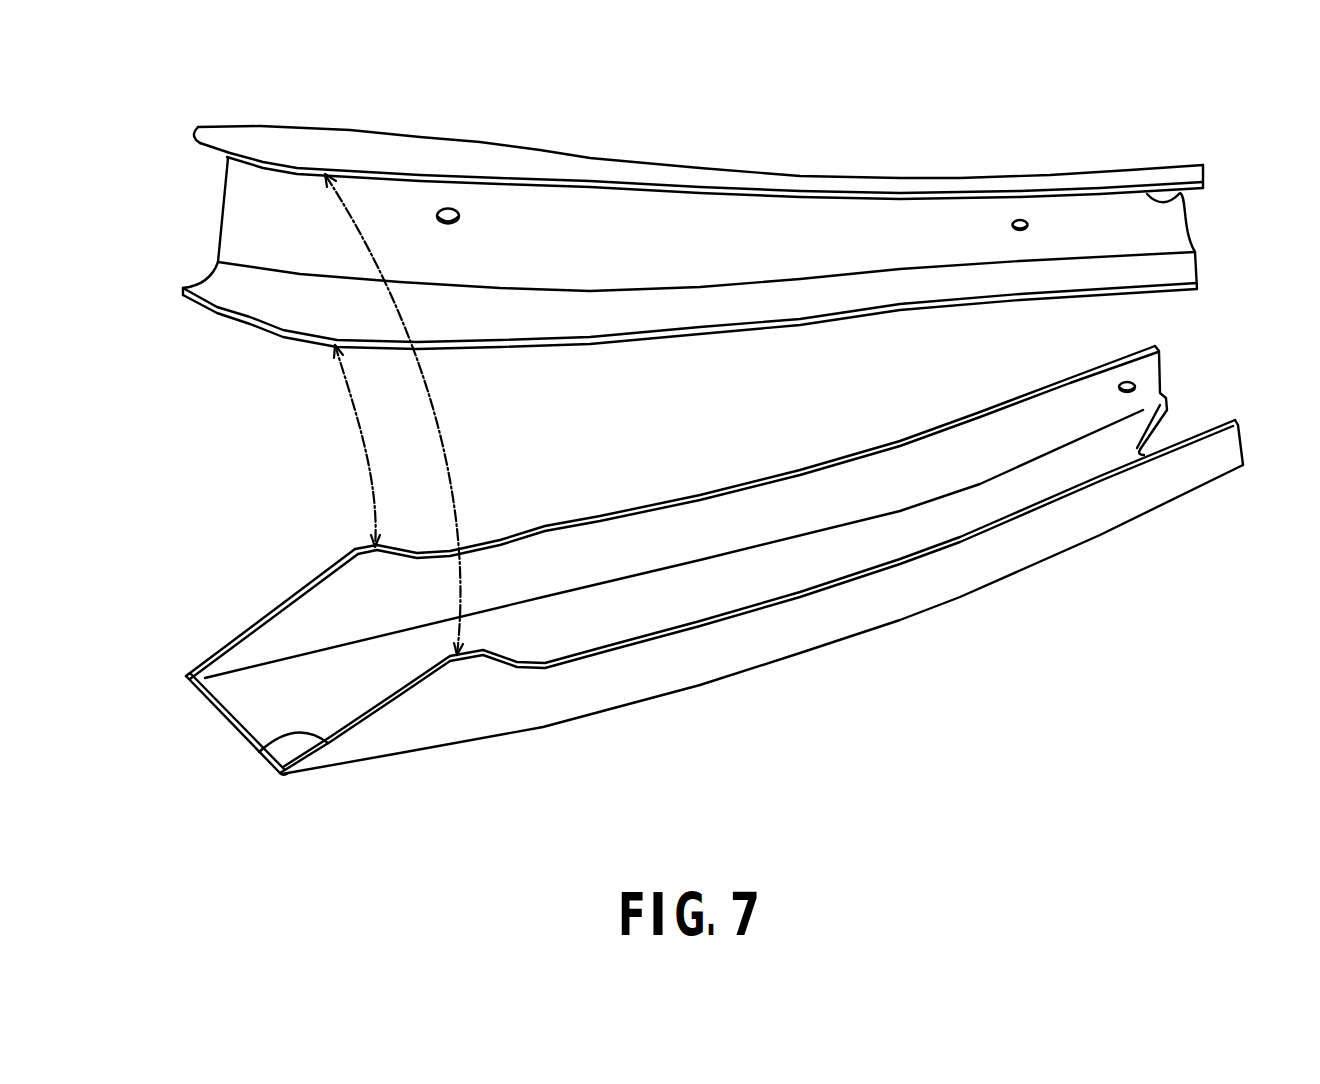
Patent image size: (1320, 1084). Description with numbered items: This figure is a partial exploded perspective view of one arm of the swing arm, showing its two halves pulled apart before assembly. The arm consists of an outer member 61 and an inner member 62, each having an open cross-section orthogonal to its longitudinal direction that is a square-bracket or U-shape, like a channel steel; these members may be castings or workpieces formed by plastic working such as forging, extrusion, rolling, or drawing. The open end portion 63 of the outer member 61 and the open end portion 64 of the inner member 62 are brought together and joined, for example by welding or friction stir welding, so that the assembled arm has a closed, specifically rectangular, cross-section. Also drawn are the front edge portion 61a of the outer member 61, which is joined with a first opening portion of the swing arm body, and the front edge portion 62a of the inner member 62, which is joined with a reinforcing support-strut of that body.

The outer member 61 is at (950, 603).
The front edge portion 61a is at (271, 605).
The inner member 62 is at (913, 178).
The front edge portion 62a is at (198, 128).
The open end portion 63 is at (738, 487).
The open end portion 64 is at (1184, 196).